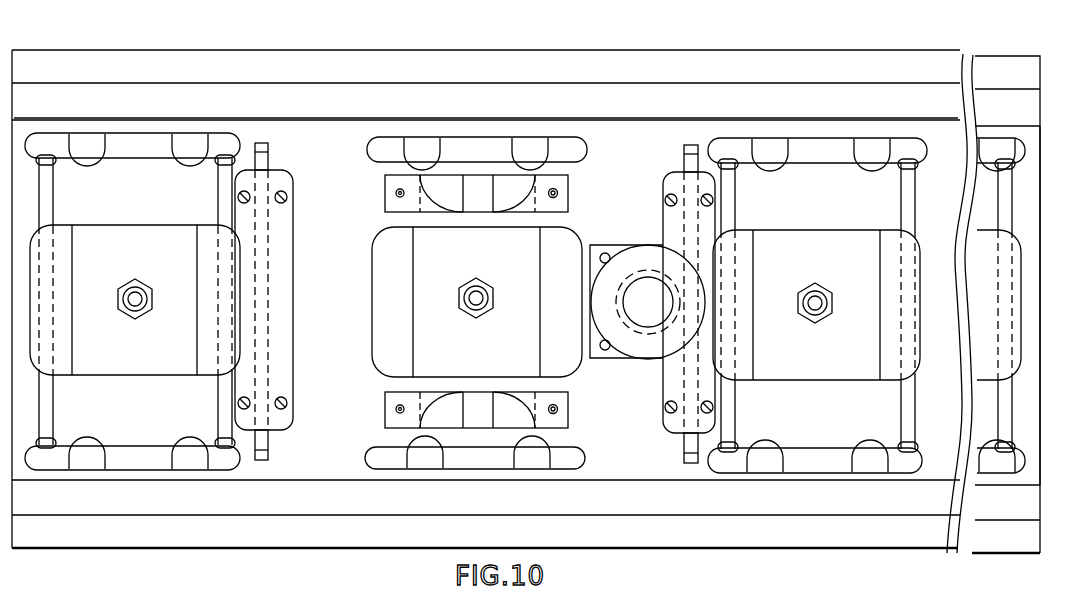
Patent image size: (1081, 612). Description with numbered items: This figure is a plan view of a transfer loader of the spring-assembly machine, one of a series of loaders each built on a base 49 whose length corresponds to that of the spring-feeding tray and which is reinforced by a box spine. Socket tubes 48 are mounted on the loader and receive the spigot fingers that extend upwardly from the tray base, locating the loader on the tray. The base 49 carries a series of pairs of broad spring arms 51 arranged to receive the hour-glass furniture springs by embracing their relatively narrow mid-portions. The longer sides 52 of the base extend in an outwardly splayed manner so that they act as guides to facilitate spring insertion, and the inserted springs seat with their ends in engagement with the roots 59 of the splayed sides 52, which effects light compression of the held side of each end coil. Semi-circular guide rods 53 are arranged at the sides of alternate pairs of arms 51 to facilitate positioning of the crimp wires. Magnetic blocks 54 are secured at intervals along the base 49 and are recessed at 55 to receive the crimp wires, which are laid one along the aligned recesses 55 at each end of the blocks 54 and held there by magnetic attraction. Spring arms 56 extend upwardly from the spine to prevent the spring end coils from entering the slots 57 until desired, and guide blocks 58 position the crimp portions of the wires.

The socket tube 48 is at (637, 262).
The base 49 is at (1022, 408).
The spring arms 51 is at (197, 258).
The longer sides 52 is at (762, 105).
The semi-circular guide rods 53 is at (1005, 215).
The magnetic blocks 54 is at (263, 142).
The recesses 55 is at (270, 157).
The spring arms 56 is at (188, 160).
The slots 57 is at (722, 140).
The guide blocks 58 is at (430, 180).
The roots 59 is at (106, 116).